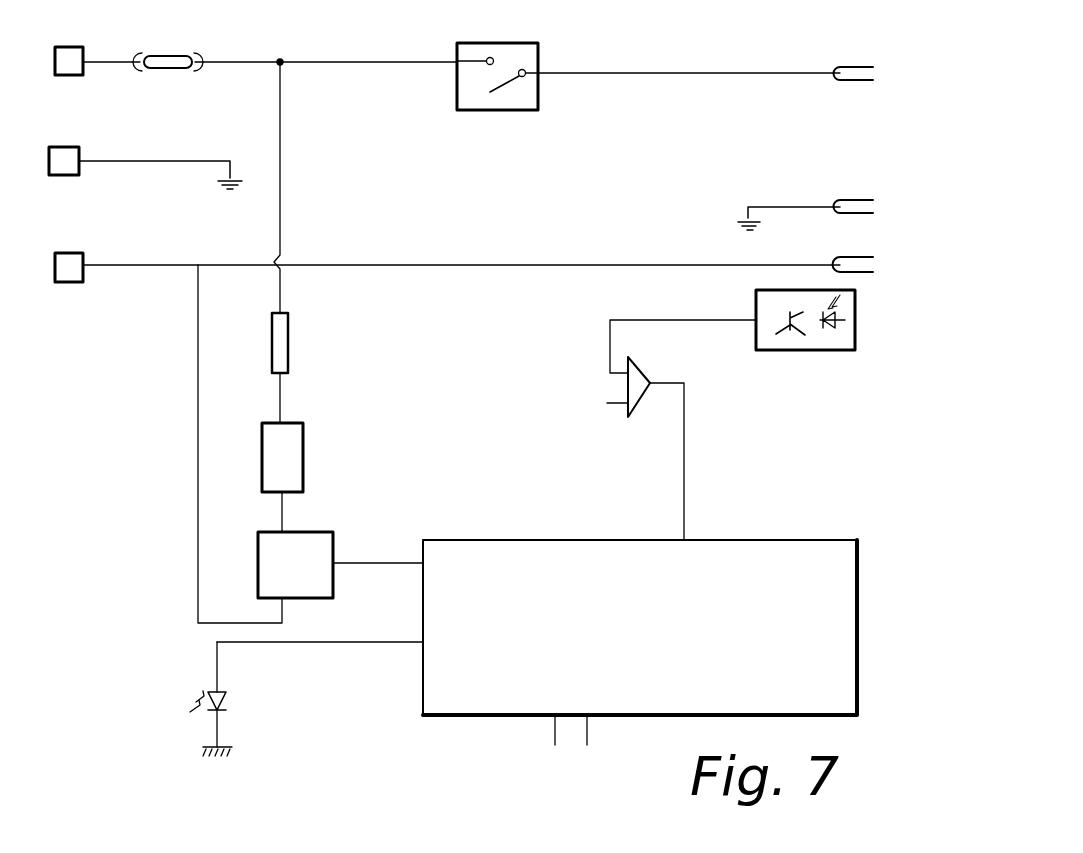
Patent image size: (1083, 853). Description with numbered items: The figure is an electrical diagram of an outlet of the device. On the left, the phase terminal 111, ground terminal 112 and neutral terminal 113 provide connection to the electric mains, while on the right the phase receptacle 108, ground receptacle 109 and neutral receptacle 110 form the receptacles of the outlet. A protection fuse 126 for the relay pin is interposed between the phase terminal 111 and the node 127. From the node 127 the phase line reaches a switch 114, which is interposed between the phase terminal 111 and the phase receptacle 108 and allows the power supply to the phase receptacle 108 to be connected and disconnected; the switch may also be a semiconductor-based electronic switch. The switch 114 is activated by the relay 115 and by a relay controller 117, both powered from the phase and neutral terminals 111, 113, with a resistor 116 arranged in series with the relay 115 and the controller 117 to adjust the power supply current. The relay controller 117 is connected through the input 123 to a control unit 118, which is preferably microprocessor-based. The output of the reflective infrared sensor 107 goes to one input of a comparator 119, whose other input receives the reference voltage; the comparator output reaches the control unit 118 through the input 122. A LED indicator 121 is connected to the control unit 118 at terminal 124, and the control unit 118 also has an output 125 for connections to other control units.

The reflective infrared sensor 107 is at (807, 344).
The phase receptacle 108 is at (846, 81).
The ground receptacle 109 is at (853, 198).
The neutral receptacle 110 is at (858, 258).
The phase terminal 111 is at (68, 48).
The ground terminal 112 is at (68, 148).
The neutral terminal 113 is at (73, 284).
The switch 114 is at (503, 43).
The relay 115 is at (298, 467).
The resistor 116 is at (290, 350).
The relay controller 117 is at (318, 548).
The control unit 118 is at (783, 572).
The comparator 119 is at (640, 415).
The LED indicator 121 is at (228, 700).
The input 122 is at (680, 569).
The input 123 is at (458, 567).
The controller output 124 is at (458, 647).
The output 125 is at (578, 710).
The protection fuse 126 is at (163, 56).
The node 127 is at (294, 47).